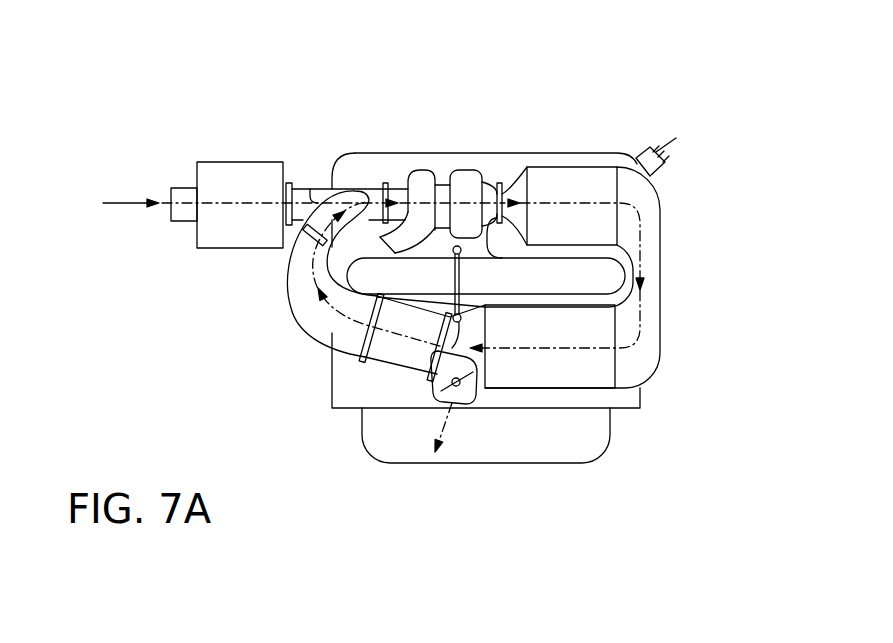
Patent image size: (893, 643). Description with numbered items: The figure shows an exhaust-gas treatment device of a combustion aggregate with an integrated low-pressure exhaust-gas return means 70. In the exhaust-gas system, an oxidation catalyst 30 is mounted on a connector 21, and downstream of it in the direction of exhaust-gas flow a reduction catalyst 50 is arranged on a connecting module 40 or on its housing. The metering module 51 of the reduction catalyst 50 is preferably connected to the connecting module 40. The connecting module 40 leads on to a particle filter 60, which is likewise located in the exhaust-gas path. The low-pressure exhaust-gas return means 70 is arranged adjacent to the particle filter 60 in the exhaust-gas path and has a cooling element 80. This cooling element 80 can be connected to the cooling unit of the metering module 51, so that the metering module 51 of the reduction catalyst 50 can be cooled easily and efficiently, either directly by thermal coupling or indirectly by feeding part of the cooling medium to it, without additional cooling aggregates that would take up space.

The connector 21 is at (450, 153).
The oxidation catalyst 30 is at (600, 188).
The connecting module 40 is at (652, 273).
The reduction catalyst 50 is at (645, 207).
The metering module 51 is at (650, 160).
The particle filter 60 is at (600, 367).
The low-pressure exhaust-gas return means 70 is at (332, 327).
The cooling element 80 is at (400, 350).